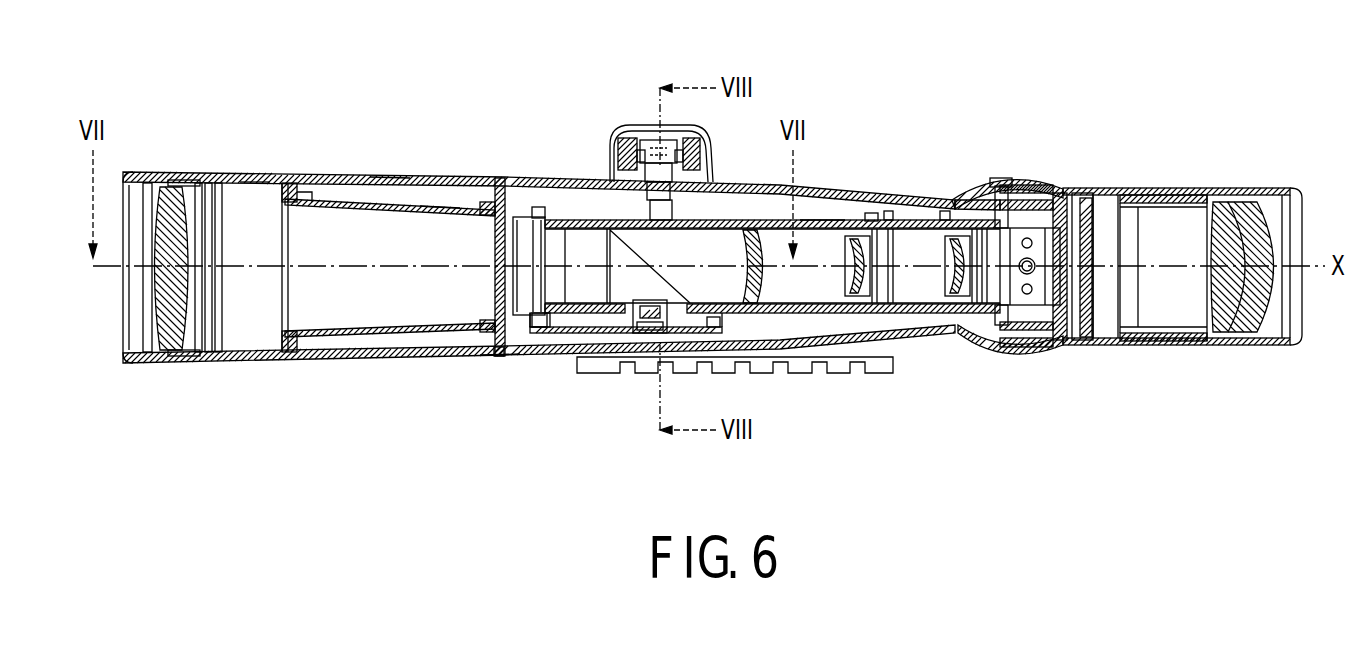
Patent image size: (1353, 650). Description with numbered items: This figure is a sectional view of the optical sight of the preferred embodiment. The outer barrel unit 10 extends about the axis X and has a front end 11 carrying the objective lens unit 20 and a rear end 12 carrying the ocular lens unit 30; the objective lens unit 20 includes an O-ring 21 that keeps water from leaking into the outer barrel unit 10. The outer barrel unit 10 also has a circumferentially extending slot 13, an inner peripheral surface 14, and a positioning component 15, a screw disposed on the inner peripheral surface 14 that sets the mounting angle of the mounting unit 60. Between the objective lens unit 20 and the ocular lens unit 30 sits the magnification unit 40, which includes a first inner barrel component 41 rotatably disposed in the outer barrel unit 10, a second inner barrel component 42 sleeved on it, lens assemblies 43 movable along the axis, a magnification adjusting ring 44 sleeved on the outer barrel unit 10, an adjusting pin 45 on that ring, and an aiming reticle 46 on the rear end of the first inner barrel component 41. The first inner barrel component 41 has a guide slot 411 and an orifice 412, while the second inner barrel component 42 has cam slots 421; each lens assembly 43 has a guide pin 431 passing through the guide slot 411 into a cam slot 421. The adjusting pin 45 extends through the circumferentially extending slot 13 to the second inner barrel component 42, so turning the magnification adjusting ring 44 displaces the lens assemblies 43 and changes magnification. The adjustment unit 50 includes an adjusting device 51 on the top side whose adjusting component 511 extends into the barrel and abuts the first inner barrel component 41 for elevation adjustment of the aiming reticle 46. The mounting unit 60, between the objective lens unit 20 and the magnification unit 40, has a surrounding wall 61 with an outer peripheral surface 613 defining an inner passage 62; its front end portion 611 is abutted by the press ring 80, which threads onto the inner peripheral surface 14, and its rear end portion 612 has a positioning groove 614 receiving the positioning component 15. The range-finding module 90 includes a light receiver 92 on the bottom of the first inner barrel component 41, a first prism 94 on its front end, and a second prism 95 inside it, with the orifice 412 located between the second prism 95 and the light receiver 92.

The outer barrel unit 10 is at (284, 380).
The front end 11 is at (183, 180).
The rear end 12 is at (1228, 188).
The circumferentially extending slot 13 is at (983, 190).
The inner peripheral surface 14 is at (387, 360).
The positioning component 15 is at (500, 358).
The objective lens unit 20 is at (112, 322).
The O-ring 21 is at (187, 178).
The ocular lens unit 30 is at (1318, 206).
The magnification unit 40 is at (917, 203).
The first inner barrel component 41 is at (906, 318).
The guide slot 411 is at (822, 212).
The orifice 412 is at (632, 300).
The second inner barrel component 42 is at (833, 314).
The cam slot 421 is at (888, 212).
The lens assembly 43 is at (850, 306).
The guide pin 431 is at (868, 219).
The magnification adjusting ring 44 is at (1050, 352).
The adjusting pin 45 is at (1007, 182).
The aiming reticle 46 is at (1086, 239).
The adjustment unit 50 is at (599, 123).
The adjusting device 51 is at (620, 128).
The adjusting component 511 is at (650, 140).
The mounting unit 60 is at (342, 184).
The surrounding wall 61 is at (389, 177).
The front end portion 611 is at (255, 178).
The rear end portion 612 is at (497, 184).
The outer peripheral surface 613 is at (307, 195).
The positioning groove 614 is at (522, 358).
The inner passage 62 is at (440, 207).
The press ring 80 is at (219, 335).
The range-finding module 90 is at (692, 360).
The light receiver 92 is at (648, 335).
The first prism 94 is at (525, 230).
The second prism 95 is at (680, 252).